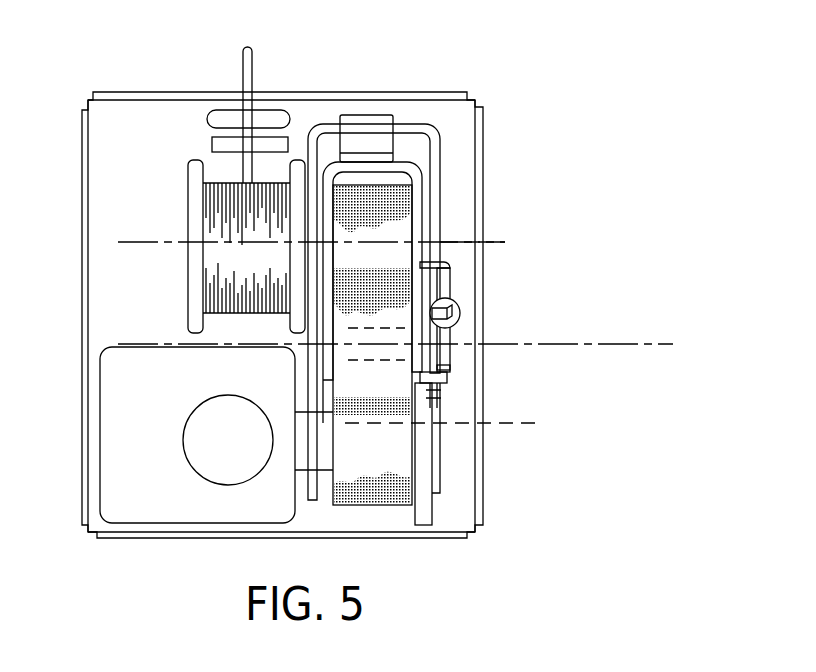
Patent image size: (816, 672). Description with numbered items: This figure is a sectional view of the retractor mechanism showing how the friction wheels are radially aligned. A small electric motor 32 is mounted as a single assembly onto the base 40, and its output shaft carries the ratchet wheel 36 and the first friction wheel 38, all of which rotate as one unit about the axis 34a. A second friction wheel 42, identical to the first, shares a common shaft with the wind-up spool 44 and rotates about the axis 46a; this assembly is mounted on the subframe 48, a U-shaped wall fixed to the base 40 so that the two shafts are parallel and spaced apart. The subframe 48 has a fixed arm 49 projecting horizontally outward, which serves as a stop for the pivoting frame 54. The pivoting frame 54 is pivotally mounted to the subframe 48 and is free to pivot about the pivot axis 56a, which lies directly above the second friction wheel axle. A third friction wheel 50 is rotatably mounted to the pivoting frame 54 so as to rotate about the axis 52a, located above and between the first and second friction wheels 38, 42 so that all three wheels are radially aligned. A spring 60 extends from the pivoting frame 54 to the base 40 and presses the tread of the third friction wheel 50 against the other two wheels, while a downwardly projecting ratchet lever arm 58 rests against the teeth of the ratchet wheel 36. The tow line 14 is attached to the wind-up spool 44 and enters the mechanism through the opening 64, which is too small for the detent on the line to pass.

The tow line 14 is at (240, 46).
The electric motor 32 is at (162, 505).
The axis 34a is at (507, 427).
The ratchet wheel 36 is at (430, 515).
The first friction wheel 38 is at (388, 493).
The base 40 is at (470, 165).
The second friction wheel 42 is at (410, 220).
The wind-up spool 44 is at (223, 182).
The axis 46a is at (177, 237).
The subframe 48 is at (420, 167).
The fixed arm 49 is at (373, 116).
The third friction wheel 50 is at (385, 282).
The axis 52a is at (605, 343).
The pivoting frame 54 is at (415, 125).
The pivot axis 56a is at (493, 237).
The ratchet lever arm 58 is at (453, 370).
The spring 60 is at (467, 313).
The opening 64 is at (277, 115).